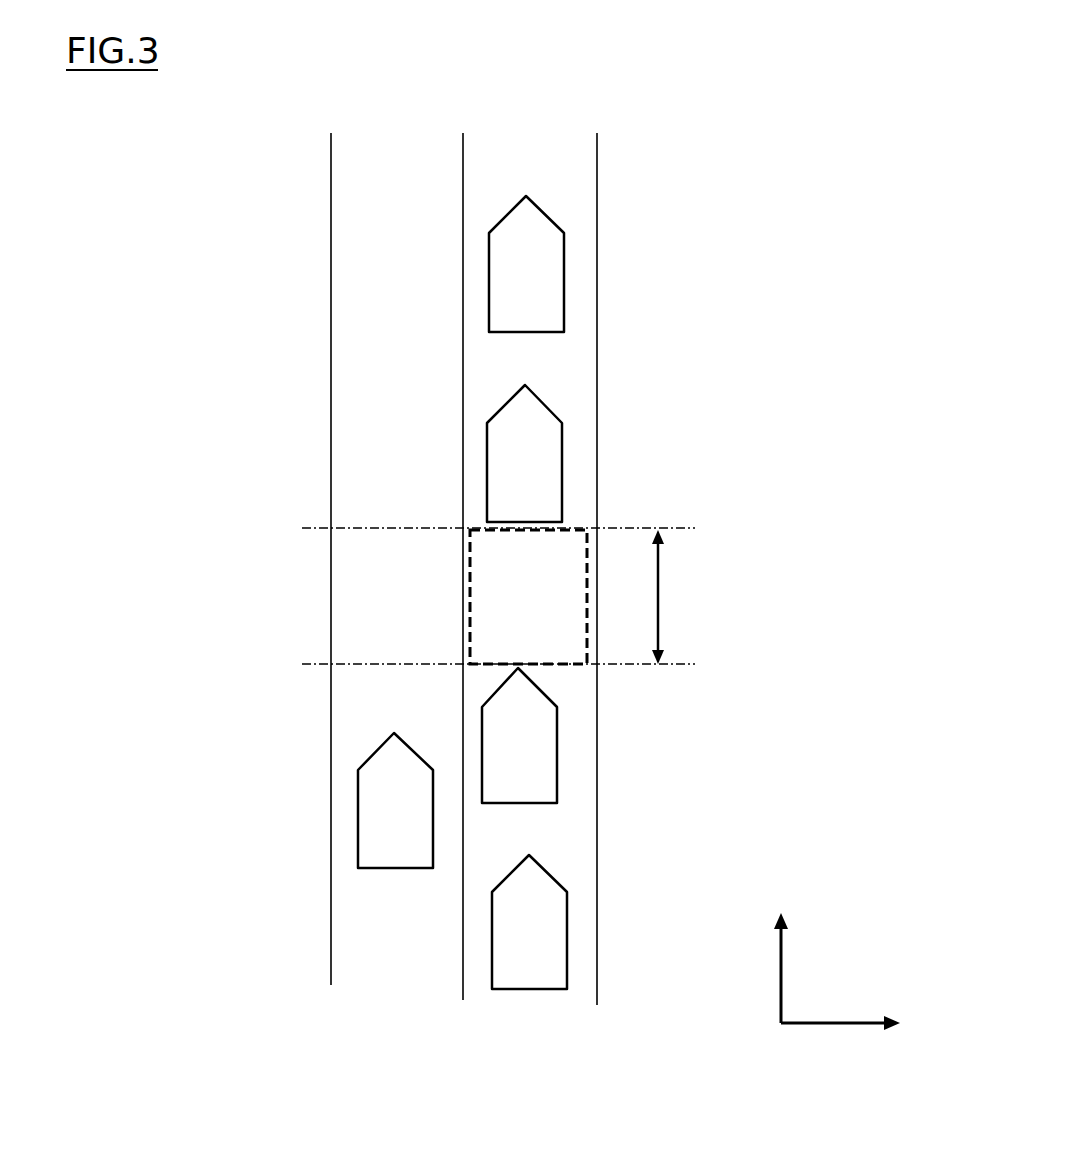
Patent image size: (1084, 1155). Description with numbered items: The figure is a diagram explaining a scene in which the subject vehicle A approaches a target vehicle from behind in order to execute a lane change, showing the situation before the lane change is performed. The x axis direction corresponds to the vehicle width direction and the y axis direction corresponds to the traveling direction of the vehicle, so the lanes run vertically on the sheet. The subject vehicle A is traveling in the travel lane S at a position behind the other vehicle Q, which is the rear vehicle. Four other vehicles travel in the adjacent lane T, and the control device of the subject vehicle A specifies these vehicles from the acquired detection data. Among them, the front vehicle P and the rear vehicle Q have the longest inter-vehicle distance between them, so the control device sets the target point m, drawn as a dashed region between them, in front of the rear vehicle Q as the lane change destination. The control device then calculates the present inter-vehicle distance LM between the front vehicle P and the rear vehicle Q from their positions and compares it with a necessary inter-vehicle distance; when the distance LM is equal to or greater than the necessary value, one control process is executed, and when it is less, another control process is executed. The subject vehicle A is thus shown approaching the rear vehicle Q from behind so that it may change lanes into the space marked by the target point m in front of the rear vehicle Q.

The travel lane S is at (331, 128).
The adjacent lane T is at (463, 128).
The front vehicle P is at (524, 453).
The rear vehicle Q is at (519, 735).
The subject vehicle A is at (395, 800).
The target point m is at (528, 597).
The inter-vehicle distance LM is at (676, 597).
The x axis x is at (856, 1022).
The y axis y is at (779, 945).